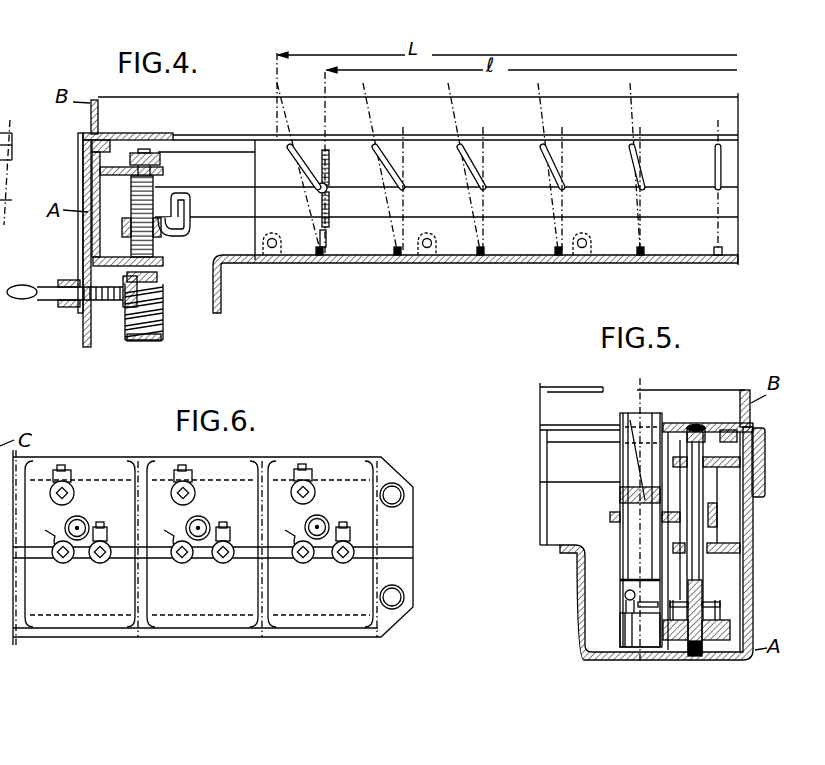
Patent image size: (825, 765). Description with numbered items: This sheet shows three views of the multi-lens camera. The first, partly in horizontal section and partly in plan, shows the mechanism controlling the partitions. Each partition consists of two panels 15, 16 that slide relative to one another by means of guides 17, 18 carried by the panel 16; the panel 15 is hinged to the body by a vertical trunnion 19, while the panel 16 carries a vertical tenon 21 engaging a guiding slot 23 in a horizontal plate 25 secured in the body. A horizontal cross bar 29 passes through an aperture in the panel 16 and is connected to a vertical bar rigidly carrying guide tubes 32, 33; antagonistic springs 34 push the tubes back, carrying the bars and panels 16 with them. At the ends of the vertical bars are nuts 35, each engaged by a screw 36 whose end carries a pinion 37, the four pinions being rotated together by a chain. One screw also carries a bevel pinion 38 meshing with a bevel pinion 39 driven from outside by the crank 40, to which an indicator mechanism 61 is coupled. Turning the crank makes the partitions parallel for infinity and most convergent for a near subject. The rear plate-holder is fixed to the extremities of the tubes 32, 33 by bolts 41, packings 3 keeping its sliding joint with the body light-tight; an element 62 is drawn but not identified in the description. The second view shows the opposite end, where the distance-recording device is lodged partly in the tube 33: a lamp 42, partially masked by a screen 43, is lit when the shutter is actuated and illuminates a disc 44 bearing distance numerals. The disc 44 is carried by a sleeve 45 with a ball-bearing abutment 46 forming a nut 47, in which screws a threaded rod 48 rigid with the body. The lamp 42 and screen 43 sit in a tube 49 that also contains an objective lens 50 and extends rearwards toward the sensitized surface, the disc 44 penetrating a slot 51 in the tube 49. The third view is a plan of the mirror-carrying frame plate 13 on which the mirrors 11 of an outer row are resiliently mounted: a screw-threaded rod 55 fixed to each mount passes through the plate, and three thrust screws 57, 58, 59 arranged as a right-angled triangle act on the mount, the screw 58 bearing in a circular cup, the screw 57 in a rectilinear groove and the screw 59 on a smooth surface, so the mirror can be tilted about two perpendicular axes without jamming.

In FIG. 5, the packings 3 is at (766, 445).
In FIG. 6, the mirror 11 is at (43, 617).
In FIG. 6, the frame plate 13 is at (313, 613).
In FIG. 4, the panel 15 is at (320, 238).
In FIG. 4, the panel 16 is at (320, 150).
In FIG. 4, the guide 17 is at (329, 207).
In FIG. 4, the guide 18 is at (329, 165).
In FIG. 4, the vertical trunnion 19 is at (319, 257).
In FIG. 4, the vertical tenon 21 is at (318, 190).
In FIG. 4, the guiding slot 23 is at (290, 147).
In FIG. 4, the horizontal plate 25 is at (257, 165).
In FIG. 4, the horizontal cross bar 29 is at (218, 208).
In FIG. 4, the guide tube 32 is at (145, 341).
In FIG. 5, the guide tube 33 is at (710, 573).
In FIG. 4, the antagonistic spring 34 is at (161, 328).
In FIG. 4, the nut 35 is at (128, 230).
In FIG. 4, the screw 36 is at (156, 246).
In FIG. 4, the pinion 37 is at (133, 150).
In FIG. 4, the bevel pinion 38 is at (157, 280).
In FIG. 4, the bevel pinion 39 is at (117, 303).
In FIG. 4, the crank 40 is at (35, 295).
In FIG. 4, the bolt 41 is at (0, 200).
In FIG. 5, the bolt 41 is at (695, 423).
In FIG. 5, the lamp 42 is at (624, 595).
In FIG. 5, the screen 43 is at (622, 580).
In FIG. 5, the disc 44 is at (722, 600).
In FIG. 5, the sleeve 45 is at (722, 610).
In FIG. 5, the ball-bearing abutment 46 is at (673, 638).
In FIG. 5, the nut 47 is at (710, 640).
In FIG. 5, the threaded rod 48 is at (697, 654).
In FIG. 5, the tube 49 is at (650, 412).
In FIG. 5, the objective lens 50 is at (619, 497).
In FIG. 5, the slot 51 is at (650, 608).
In FIG. 6, the screw-threaded rod 55 is at (79, 522).
In FIG. 6, the thrust screw 57 is at (177, 490).
In FIG. 6, the thrust screw 58 is at (181, 556).
In FIG. 6, the thrust screw 59 is at (223, 556).
In FIG. 4, the indicator mechanism 61 is at (80, 252).
In FIG. 4, the member 62 is at (7, 128).